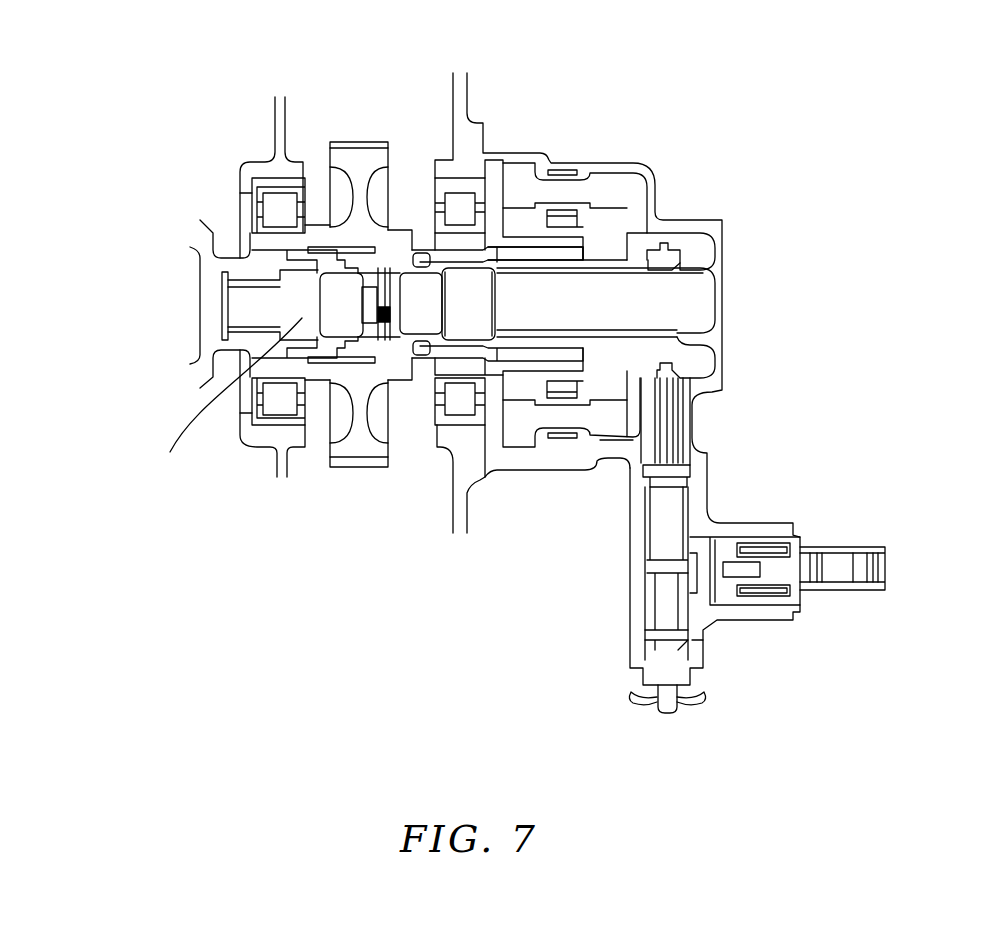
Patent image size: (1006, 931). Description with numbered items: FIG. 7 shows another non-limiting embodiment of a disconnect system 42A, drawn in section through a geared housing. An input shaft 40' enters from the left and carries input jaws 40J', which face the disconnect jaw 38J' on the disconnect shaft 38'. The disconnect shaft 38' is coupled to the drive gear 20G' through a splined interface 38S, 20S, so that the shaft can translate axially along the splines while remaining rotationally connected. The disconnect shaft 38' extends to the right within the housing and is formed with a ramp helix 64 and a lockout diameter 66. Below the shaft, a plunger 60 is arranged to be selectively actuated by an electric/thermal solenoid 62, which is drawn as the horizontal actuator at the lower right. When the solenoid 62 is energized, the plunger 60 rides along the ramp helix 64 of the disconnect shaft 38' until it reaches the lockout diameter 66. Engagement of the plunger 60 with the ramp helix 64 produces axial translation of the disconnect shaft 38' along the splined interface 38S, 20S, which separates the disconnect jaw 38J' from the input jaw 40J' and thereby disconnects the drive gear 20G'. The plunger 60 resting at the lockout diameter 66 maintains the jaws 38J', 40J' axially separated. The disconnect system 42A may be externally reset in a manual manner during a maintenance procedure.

The disconnect system 42A is at (886, 377).
The drive gear 20G' is at (286, 287).
The disconnect shaft 38' is at (495, 305).
The ramp helix 64 is at (673, 247).
The lockout diameter 66 is at (650, 355).
The splined interface 38S is at (453, 250).
The splined interface 20S is at (453, 250).
The input shaft 40' is at (237, 313).
The input jaw 40J' is at (371, 204).
The disconnect jaw 38J' is at (417, 224).
The plunger 60 is at (668, 428).
The electric/thermal solenoid 62 is at (757, 570).